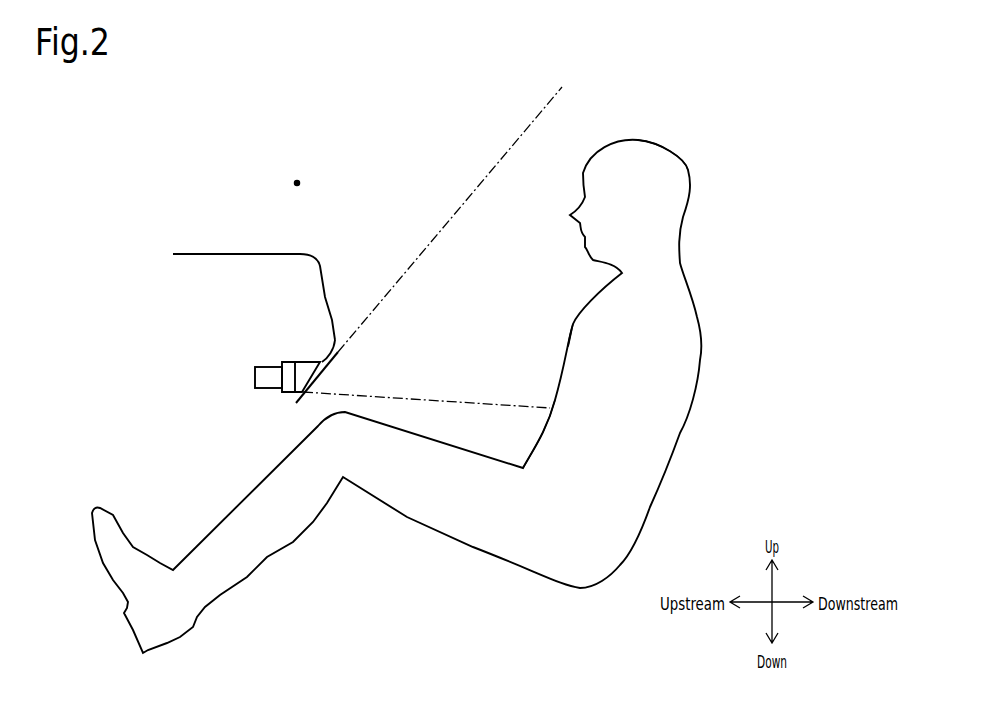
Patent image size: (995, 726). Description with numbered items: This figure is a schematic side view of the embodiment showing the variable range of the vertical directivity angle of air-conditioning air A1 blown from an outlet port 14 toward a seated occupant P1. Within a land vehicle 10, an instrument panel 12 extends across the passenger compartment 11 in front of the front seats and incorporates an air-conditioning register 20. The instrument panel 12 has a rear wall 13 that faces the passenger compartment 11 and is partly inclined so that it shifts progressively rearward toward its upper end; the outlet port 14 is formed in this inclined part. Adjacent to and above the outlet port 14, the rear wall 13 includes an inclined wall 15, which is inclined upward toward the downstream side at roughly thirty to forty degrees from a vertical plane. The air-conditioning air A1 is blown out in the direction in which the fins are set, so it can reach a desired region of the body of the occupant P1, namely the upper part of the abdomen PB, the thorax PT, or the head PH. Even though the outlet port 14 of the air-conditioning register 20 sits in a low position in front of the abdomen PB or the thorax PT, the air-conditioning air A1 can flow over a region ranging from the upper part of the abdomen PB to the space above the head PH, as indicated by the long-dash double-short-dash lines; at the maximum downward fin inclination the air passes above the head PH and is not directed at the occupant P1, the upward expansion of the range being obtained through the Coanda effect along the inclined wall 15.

The land vehicle 10 is at (250, 269).
The passenger compartment 11 is at (297, 181).
The instrument panel 12 is at (192, 252).
The rear wall 13 is at (299, 404).
The outlet port 14 is at (322, 369).
The inclined wall 15 is at (336, 352).
The air-conditioning register 20 is at (263, 390).
The air-conditioning air A1 is at (442, 227).
The head PH is at (690, 170).
The occupant P1 is at (692, 290).
The thorax PT is at (573, 350).
The abdomen PB is at (547, 443).